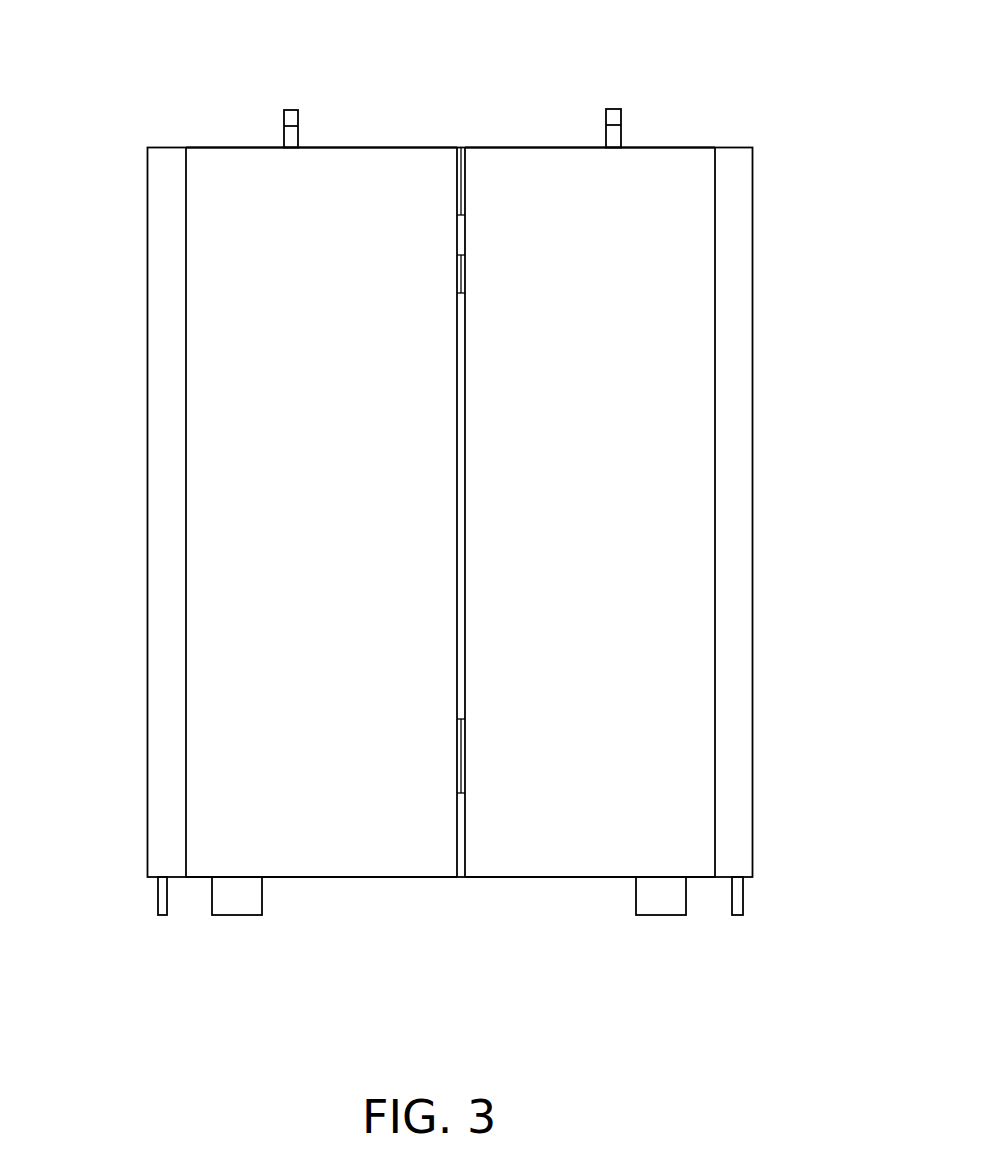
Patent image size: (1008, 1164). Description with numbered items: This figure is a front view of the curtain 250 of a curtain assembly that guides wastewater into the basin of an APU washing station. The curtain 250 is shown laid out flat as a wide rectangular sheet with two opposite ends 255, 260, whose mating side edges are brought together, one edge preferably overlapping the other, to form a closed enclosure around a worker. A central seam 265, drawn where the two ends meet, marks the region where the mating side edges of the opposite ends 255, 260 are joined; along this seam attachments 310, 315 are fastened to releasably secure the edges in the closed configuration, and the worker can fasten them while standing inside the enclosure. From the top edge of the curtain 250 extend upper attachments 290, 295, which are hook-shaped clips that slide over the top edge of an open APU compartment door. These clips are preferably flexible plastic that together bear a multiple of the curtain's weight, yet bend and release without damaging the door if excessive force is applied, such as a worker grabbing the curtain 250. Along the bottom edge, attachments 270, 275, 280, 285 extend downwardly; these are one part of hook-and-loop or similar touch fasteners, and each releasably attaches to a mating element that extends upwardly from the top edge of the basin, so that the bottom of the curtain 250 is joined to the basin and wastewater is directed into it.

The curtain 250 is at (753, 522).
The opposite end of the curtain 255 is at (500, 853).
The opposite end of the curtain 260 is at (333, 838).
The center divider 265 is at (460, 147).
The attachment 270 is at (740, 900).
The attachment 275 is at (655, 900).
The attachment 280 is at (237, 903).
The attachment 285 is at (162, 893).
The upper attachment 290 is at (613, 117).
The upper attachment 295 is at (292, 120).
The attachment 310 is at (459, 748).
The attachment 315 is at (458, 270).